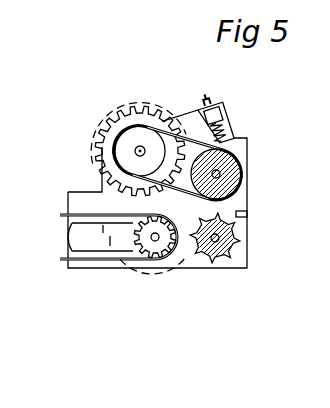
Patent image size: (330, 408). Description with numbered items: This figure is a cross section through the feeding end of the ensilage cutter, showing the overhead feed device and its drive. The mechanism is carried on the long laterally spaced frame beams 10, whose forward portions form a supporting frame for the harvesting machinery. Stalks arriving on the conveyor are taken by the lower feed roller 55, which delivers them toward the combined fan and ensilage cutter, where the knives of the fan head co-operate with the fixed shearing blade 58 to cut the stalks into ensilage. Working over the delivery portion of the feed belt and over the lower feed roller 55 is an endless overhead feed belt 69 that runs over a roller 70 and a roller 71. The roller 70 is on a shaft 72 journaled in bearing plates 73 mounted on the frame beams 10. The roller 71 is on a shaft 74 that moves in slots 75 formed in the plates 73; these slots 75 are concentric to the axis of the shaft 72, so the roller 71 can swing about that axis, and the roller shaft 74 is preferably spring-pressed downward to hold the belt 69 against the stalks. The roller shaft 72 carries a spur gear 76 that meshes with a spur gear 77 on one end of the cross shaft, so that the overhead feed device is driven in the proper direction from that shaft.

The frame beams 10 is at (78, 228).
The feed roller 55 is at (242, 232).
The fixed shearing blade 58 is at (249, 213).
The overhead feed belt 69 is at (165, 122).
The roller 70 is at (130, 136).
The roller 71 is at (247, 183).
The shaft 72 is at (137, 153).
The bearing plates 73 is at (100, 147).
The roller shaft 74 is at (243, 171).
The slots 75 is at (237, 130).
The spur gear 76 is at (146, 97).
The spur gear 77 is at (72, 192).